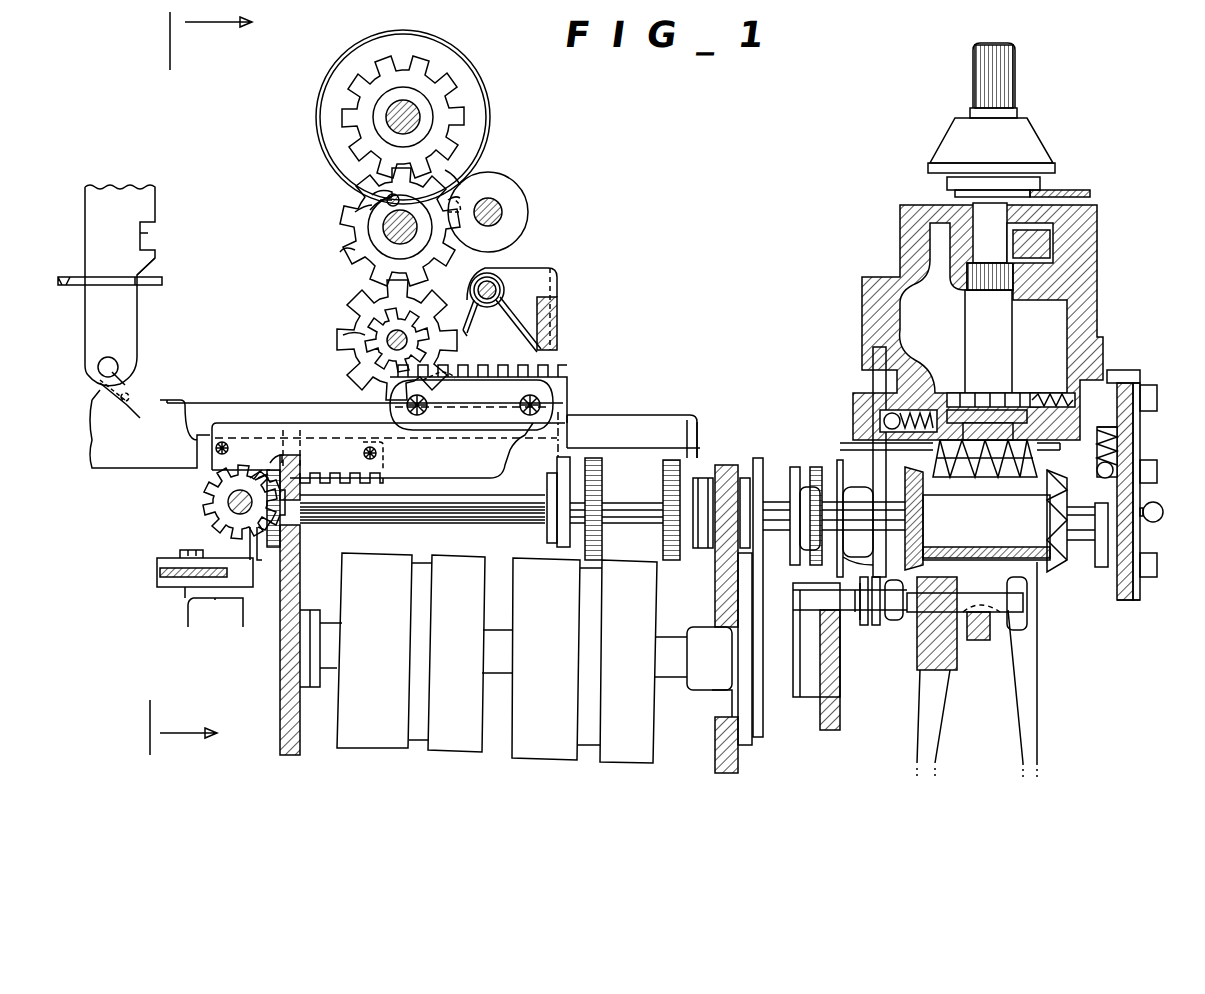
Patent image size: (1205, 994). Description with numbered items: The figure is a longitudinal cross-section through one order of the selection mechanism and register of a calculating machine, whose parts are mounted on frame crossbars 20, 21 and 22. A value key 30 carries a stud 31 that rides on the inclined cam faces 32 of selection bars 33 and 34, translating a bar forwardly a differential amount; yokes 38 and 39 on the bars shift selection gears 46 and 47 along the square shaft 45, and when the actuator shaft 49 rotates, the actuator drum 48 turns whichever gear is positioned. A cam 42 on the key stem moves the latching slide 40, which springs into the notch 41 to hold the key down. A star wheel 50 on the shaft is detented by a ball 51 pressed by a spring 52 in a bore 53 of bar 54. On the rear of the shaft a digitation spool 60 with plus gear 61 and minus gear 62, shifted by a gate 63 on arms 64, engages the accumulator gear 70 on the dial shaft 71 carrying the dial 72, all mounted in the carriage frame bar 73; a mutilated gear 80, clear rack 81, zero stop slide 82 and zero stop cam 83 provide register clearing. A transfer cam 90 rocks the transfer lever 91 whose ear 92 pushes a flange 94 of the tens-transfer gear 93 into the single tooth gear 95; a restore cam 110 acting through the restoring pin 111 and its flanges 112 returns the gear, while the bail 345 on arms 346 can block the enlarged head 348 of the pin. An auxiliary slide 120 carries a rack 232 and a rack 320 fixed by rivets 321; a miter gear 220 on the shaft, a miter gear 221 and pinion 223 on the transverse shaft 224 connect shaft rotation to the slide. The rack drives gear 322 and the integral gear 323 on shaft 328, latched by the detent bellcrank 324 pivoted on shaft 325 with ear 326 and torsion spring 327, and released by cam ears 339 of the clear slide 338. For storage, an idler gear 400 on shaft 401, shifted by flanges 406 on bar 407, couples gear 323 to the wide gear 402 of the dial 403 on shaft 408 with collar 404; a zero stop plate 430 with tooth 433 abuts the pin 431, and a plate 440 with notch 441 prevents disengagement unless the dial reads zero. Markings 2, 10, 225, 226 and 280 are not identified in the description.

The section line 2 is at (188, 383).
The knob 10 is at (1151, 512).
The crossbar 20 is at (283, 557).
The crossbar 21 is at (715, 608).
The crossbar 22 is at (1125, 600).
The key 30 is at (157, 207).
The stud 31 is at (112, 372).
The cam face 32 is at (125, 400).
The selection bar 33 is at (165, 403).
The selection bar 34 is at (200, 403).
The yoke 38 is at (590, 462).
The yoke 39 is at (693, 440).
The latching slide 40 is at (80, 285).
The notch 41 is at (148, 233).
The cam 42 is at (145, 275).
The square shaft 45 is at (523, 495).
The selection gear 46 is at (560, 543).
The selection gear 47 is at (705, 478).
The actuator drum 48 is at (513, 750).
The actuator shaft 49 is at (665, 677).
The star wheel 50 is at (1115, 490).
The ball 51 is at (1113, 473).
The spring 52 is at (1130, 450).
The bore 53 is at (1130, 430).
The bar 54 is at (1110, 380).
The digitation spool 60 is at (997, 528).
The plus gear 61 is at (910, 562).
The minus gear 62 is at (1057, 565).
The gate 63 is at (965, 550).
The arm 64 is at (1037, 668).
The accumulator gear 70 is at (960, 478).
The accumulator shaft 71 is at (965, 312).
The dial 72 is at (945, 128).
The frame bar 73 is at (1097, 222).
The mutilated gear 80 is at (967, 270).
The clear rack 81 is at (1010, 248).
The zero stop slide 82 is at (1060, 190).
The zero stop cam 83 is at (945, 190).
The transfer cam 90 is at (1023, 455).
The transfer lever 91 is at (880, 470).
The ear 92 is at (860, 490).
The tens-transfer gear 93 is at (812, 468).
The flange 94 is at (858, 566).
The single tooth tens-transfer gear 95 is at (755, 725).
The restore cam 110 is at (800, 615).
The restoring pin 111 is at (898, 625).
The flange 112 is at (870, 627).
The auxiliary slide 120 is at (500, 476).
The miter gear 220 is at (283, 527).
The miter gear 221 is at (205, 505).
The pinion 223 is at (215, 510).
The transverse shaft 224 is at (204, 495).
The bracket 225 is at (158, 572).
The ratchet 226 is at (285, 540).
The rack 232 is at (355, 485).
The collar 280 is at (1100, 575).
The rack 320 is at (528, 370).
The rivet 321 is at (553, 405).
The gear 322 is at (375, 320).
The gear 323 is at (343, 335).
The detent bellcrank 324 is at (535, 268).
The shaft 325 is at (490, 272).
The ear 326 is at (476, 338).
The torsion spring 327 is at (430, 280).
The transverse shaft 328 is at (378, 345).
The clear slide 338 is at (557, 340).
The cam ear 339 is at (553, 280).
The bail 345 is at (975, 640).
The arm 346 is at (1008, 718).
The enlarged head 348 is at (1015, 603).
The idler gear 400 is at (348, 250).
The transverse shaft 401 is at (392, 230).
The wide gear 402 is at (340, 118).
The dial 403 is at (328, 90).
The collar 404 is at (440, 105).
The flange 406 is at (525, 220).
The bar 407 is at (502, 210).
The transverse shaft 408 is at (413, 110).
The zero stop plate 430 is at (450, 200).
The pin 431 is at (355, 210).
The tooth 433 is at (450, 180).
The plate 440 is at (368, 225).
The notch 441 is at (375, 196).